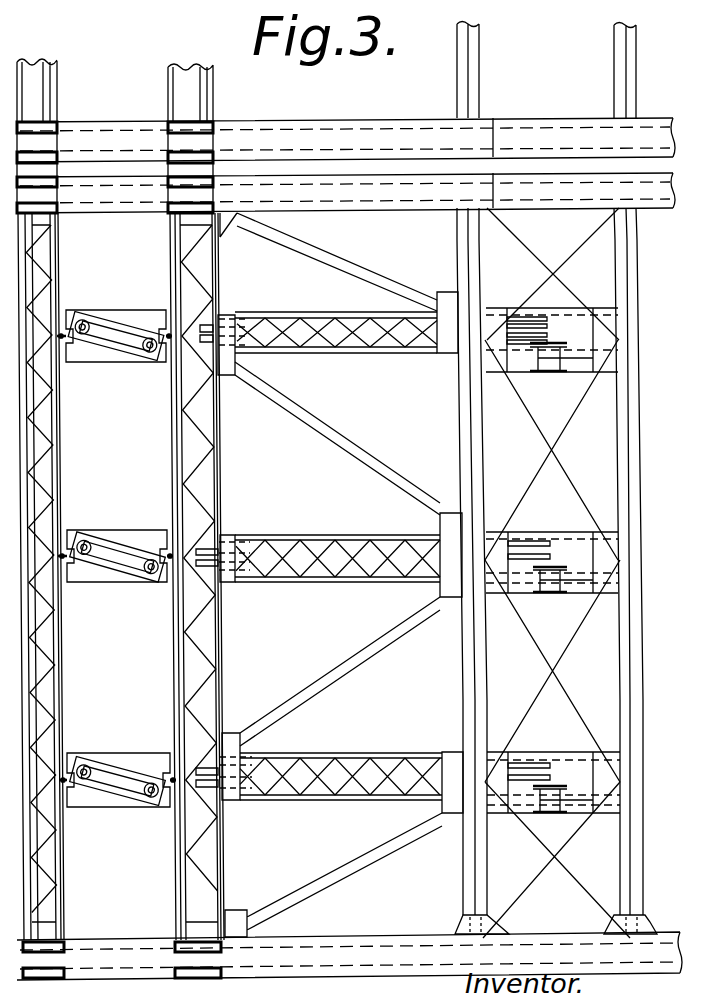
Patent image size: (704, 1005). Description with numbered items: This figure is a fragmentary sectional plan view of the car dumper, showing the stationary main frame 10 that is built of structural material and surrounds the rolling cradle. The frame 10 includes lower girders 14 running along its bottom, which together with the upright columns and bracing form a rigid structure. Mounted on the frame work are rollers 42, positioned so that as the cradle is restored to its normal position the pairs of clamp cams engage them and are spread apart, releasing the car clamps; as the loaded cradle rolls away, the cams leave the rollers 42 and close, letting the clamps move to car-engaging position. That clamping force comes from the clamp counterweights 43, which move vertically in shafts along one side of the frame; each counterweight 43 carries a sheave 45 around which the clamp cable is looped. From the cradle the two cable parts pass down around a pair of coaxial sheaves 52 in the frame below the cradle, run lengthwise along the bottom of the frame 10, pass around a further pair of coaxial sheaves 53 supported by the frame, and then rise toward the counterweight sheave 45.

The main frame 10 is at (528, 118).
The lower girders 14 is at (354, 133).
The roller 42 is at (553, 373).
The clamp counterweight 43 is at (118, 578).
The sheave 45 is at (146, 560).
The coaxial sheaves 52 is at (541, 543).
The coaxial sheaves 53 is at (236, 570).